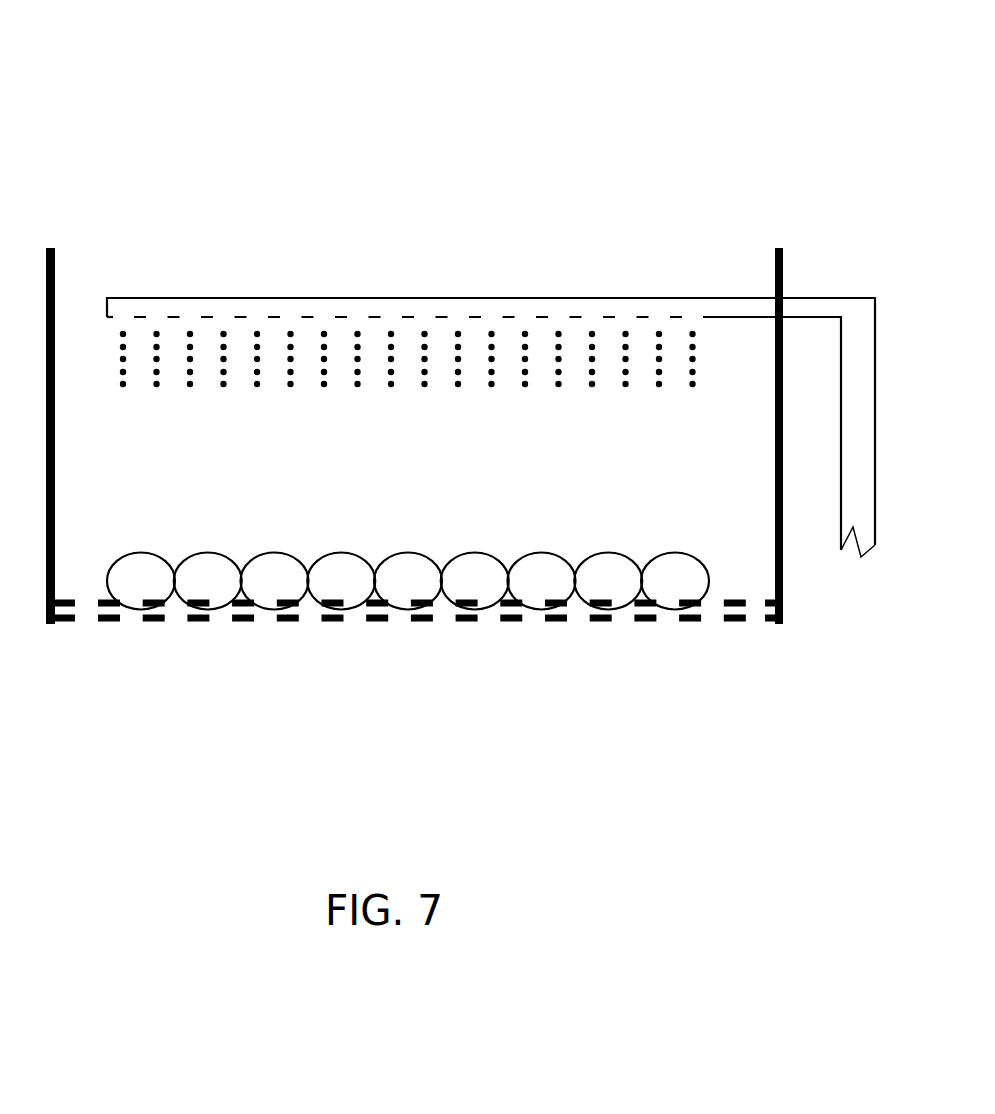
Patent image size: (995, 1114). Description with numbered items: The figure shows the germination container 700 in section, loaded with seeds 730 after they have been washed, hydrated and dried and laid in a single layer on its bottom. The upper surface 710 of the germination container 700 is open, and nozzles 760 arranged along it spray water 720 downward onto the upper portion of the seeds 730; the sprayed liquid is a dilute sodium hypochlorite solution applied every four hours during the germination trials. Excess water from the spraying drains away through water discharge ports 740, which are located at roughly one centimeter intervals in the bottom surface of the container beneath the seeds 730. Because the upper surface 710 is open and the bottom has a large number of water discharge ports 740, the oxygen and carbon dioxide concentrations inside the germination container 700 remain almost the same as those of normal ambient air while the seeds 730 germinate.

The germination container 700 is at (441, 119).
The upper surface 710 is at (212, 298).
The water 720 is at (663, 373).
The seeds 730 is at (203, 553).
The water discharge ports 740 is at (268, 617).
The nozzles 760 is at (122, 317).